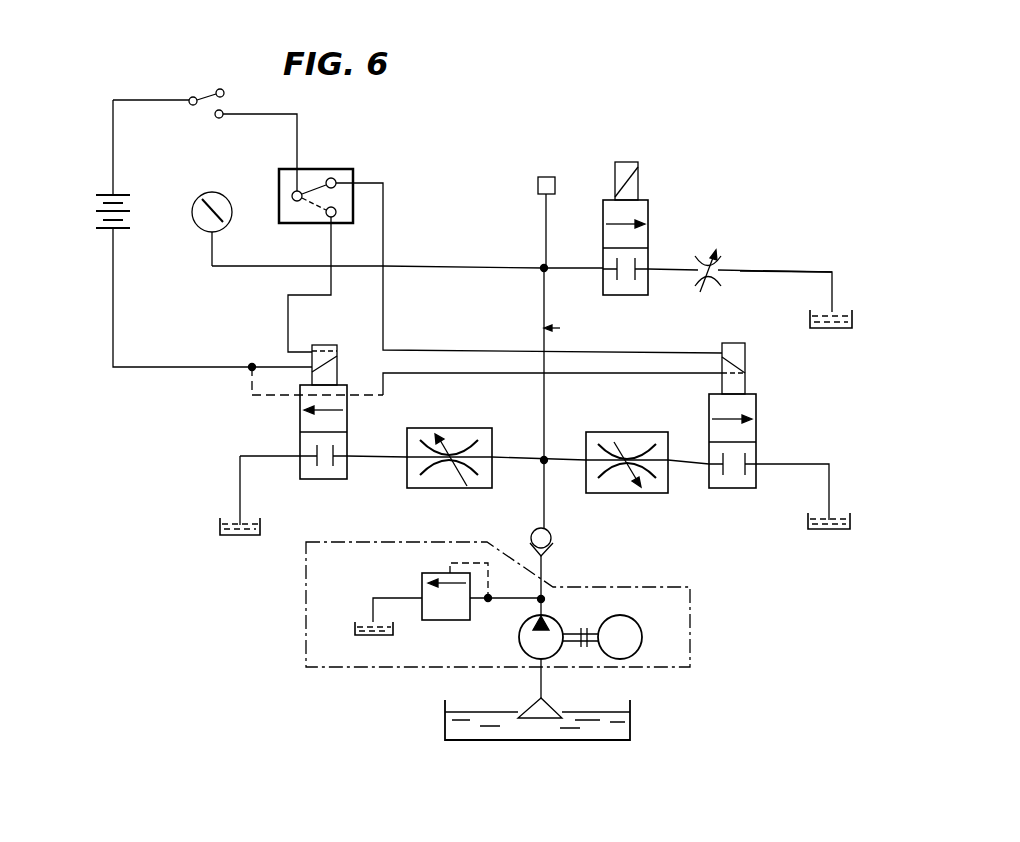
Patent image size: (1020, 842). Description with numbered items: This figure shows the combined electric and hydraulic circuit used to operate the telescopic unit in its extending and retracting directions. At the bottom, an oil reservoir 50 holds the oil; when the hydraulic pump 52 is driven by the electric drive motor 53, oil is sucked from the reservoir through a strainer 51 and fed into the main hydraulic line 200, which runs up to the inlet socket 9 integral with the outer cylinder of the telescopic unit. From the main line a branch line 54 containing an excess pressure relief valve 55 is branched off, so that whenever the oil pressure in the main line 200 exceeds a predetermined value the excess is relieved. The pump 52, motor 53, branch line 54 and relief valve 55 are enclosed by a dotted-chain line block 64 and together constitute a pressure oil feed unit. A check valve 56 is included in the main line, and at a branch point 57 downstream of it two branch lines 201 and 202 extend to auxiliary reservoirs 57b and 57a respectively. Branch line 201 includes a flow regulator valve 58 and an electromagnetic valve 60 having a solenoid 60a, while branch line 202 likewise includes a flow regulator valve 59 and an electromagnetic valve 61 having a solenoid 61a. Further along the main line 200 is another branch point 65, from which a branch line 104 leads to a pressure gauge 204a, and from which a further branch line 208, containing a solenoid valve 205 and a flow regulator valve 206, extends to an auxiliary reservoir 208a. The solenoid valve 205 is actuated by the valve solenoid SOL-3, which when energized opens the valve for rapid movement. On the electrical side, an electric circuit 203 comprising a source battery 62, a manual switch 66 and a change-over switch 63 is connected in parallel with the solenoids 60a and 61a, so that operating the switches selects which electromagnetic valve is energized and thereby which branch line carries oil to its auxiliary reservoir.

The inlet socket 9 is at (538, 184).
The oil reservoir 50 is at (630, 708).
The strainer 51 is at (530, 705).
The hydraulic pump 52 is at (518, 645).
The electric drive motor 53 is at (631, 618).
The branch line 54 is at (539, 598).
The excess pressure relief valve 55 is at (422, 580).
The check valve 56 is at (552, 538).
The branch point 57 is at (541, 463).
The auxiliary reservoir 57a is at (222, 520).
The auxiliary reservoir 57b is at (833, 530).
The flow regulator valve 58 is at (622, 432).
The flow regulator valve 59 is at (458, 428).
The electromagnetic valve 60 is at (757, 445).
The solenoid 60a is at (745, 362).
The electromagnetic valve 61 is at (325, 480).
The solenoid 61a is at (320, 345).
The source battery 62 is at (108, 194).
The change-over switch 63 is at (320, 170).
The dotted-chain line block 64 is at (306, 607).
The branch point 65 is at (544, 266).
The manual switch 66 is at (204, 98).
The branch line 104 is at (470, 268).
The main hydraulic line 200 is at (608, 344).
The branch line 201 is at (683, 464).
The branch line 202 is at (372, 456).
The electric circuit 203 is at (112, 312).
The pressure gauge 204a is at (212, 192).
The solenoid valve 205 is at (648, 212).
The flow regulator valve 206 is at (703, 266).
The branch line 208 is at (790, 262).
The auxiliary reservoir 208a is at (838, 312).
The valve solenoid SOL-3 is at (627, 162).